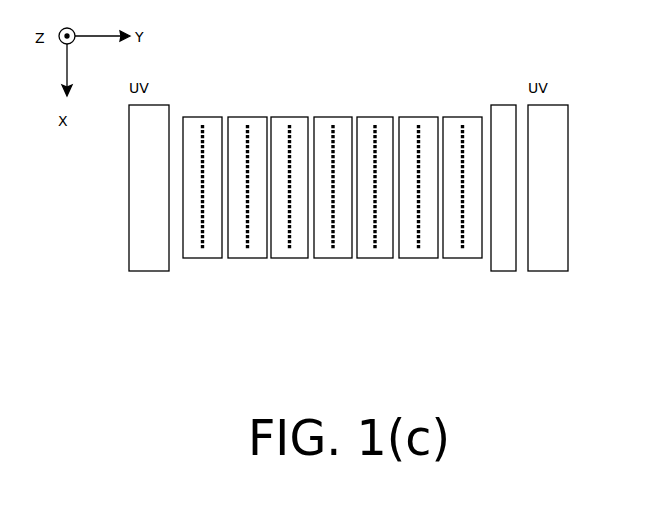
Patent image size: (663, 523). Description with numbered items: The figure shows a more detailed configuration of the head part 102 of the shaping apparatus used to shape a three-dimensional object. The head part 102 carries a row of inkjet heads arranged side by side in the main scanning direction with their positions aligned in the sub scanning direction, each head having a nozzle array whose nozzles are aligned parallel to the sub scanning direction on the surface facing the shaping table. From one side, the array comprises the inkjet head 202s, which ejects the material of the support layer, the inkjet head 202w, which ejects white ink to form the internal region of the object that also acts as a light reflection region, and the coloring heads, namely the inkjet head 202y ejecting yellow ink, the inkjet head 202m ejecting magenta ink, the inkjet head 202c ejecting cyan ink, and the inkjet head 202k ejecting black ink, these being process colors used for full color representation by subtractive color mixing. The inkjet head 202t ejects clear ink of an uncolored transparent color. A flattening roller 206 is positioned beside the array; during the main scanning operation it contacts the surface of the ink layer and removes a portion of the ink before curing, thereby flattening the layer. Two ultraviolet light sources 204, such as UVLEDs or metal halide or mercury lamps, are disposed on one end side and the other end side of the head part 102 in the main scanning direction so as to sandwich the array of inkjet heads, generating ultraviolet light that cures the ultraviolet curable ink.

The head part 102 is at (626, 41).
The ultraviolet light source 204 is at (147, 260).
The flattening roller 206 is at (503, 105).
The inkjet head 202s is at (202, 258).
The inkjet head 202w is at (248, 258).
The inkjet head 202y is at (293, 258).
The inkjet head 202m is at (333, 258).
The inkjet head 202c is at (375, 258).
The inkjet head 202k is at (420, 258).
The inkjet head 202t is at (465, 258).